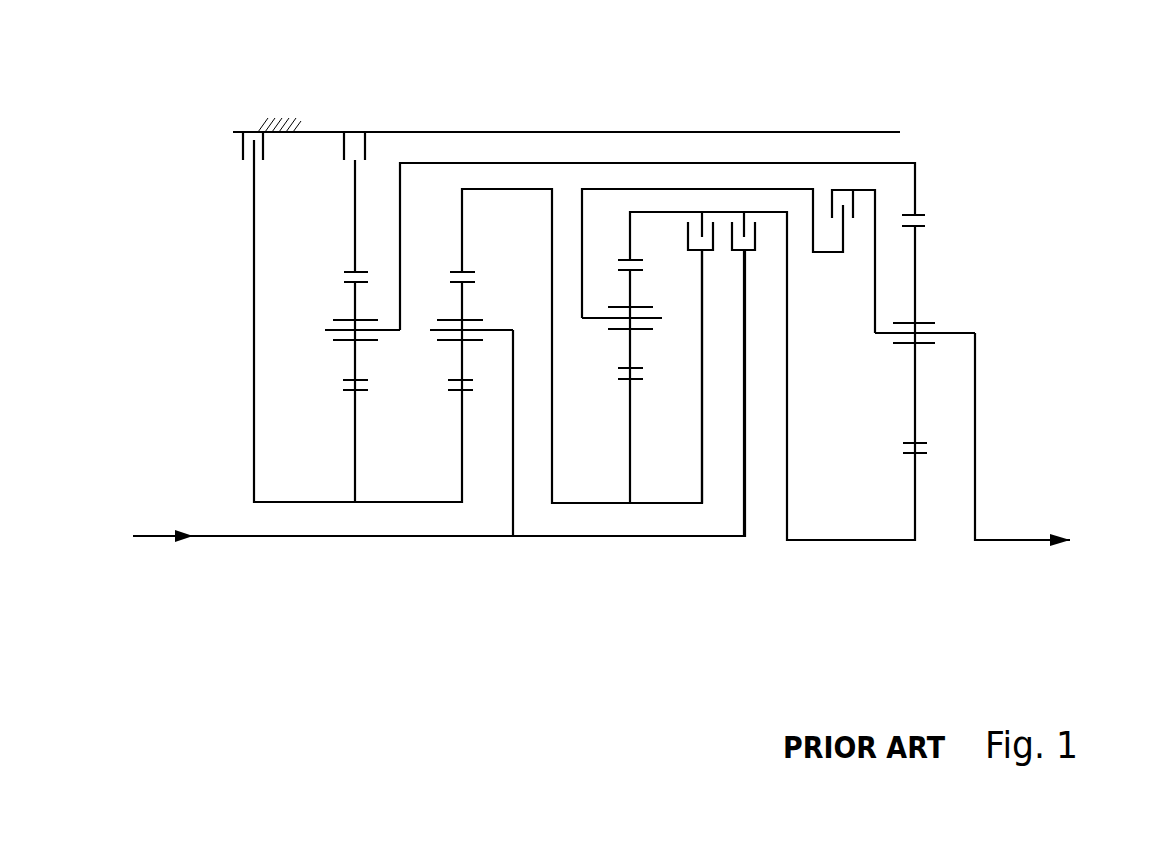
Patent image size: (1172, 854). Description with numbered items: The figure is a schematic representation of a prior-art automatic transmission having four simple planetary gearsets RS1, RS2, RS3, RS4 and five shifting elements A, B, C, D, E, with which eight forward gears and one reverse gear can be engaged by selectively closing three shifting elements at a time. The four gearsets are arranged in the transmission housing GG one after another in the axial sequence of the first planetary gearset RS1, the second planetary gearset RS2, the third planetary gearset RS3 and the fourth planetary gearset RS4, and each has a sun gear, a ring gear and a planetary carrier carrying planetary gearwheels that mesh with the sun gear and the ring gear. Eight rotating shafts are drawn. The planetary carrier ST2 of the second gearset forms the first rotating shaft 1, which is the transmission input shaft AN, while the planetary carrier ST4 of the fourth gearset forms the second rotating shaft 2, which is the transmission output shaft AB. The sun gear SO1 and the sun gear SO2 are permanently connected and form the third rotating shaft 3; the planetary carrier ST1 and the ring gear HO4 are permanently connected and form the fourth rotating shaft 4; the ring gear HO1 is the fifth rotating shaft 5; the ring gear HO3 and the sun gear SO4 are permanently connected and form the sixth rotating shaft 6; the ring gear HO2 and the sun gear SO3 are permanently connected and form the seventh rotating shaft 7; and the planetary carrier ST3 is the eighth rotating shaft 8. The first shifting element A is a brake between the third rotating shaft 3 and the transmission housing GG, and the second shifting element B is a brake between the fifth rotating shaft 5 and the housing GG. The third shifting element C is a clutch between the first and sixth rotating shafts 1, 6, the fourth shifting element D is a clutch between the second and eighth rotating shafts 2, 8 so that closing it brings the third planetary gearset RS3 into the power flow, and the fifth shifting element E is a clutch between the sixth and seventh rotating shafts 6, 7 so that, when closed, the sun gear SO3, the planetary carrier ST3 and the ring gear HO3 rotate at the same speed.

The transmission housing GG is at (275, 120).
The first shifting element A is at (245, 129).
The second shifting element B is at (346, 129).
The third shifting element C is at (753, 379).
The fourth shifting element D is at (853, 261).
The fifth shifting element E is at (690, 362).
The transmission input shaft AN is at (148, 519).
The transmission output shaft AB is at (1018, 521).
The first rotating shaft 1 is at (235, 536).
The second rotating shaft 2 is at (977, 400).
The third rotating shaft 3 is at (375, 503).
The fourth rotating shaft 4 is at (568, 163).
The fifth rotating shaft 5 is at (355, 197).
The sixth rotating shaft 6 is at (770, 212).
The seventh rotating shaft 7 is at (521, 189).
The eighth rotating shaft 8 is at (683, 190).
The ring gear of the first planetary gearset HO1 is at (355, 232).
The ring gear of the second planetary gearset HO2 is at (462, 237).
The ring gear of the third planetary gearset HO3 is at (630, 235).
The ring gear of the fourth planetary gearset HO4 is at (915, 195).
The sun gear of the first planetary gearset SO1 is at (355, 447).
The sun gear of the second planetary gearset SO2 is at (462, 453).
The sun gear of the third planetary gearset SO3 is at (632, 453).
The sun gear of the fourth planetary gearset SO4 is at (915, 500).
The planetary carrier of the first planetary gearset ST1 is at (325, 330).
The planetary carrier of the second planetary gearset ST2 is at (513, 332).
The planetary carrier of the third planetary gearset ST3 is at (595, 318).
The planetary carrier of the fourth planetary gearset ST4 is at (950, 332).
The first planetary gearset RS1 is at (343, 352).
The second planetary gearset RS2 is at (450, 352).
The third planetary gearset RS3 is at (617, 340).
The fourth planetary gearset RS4 is at (905, 353).